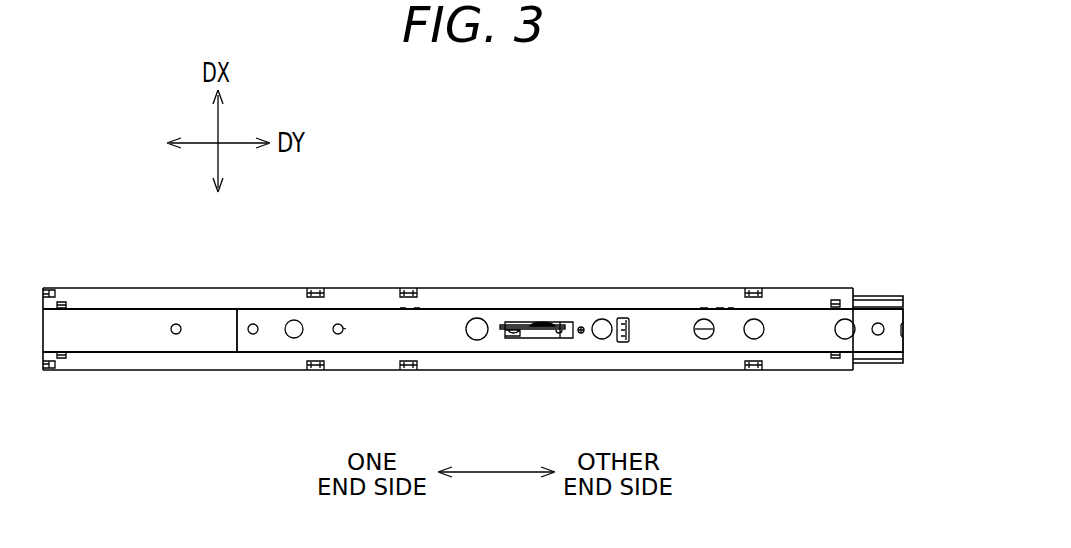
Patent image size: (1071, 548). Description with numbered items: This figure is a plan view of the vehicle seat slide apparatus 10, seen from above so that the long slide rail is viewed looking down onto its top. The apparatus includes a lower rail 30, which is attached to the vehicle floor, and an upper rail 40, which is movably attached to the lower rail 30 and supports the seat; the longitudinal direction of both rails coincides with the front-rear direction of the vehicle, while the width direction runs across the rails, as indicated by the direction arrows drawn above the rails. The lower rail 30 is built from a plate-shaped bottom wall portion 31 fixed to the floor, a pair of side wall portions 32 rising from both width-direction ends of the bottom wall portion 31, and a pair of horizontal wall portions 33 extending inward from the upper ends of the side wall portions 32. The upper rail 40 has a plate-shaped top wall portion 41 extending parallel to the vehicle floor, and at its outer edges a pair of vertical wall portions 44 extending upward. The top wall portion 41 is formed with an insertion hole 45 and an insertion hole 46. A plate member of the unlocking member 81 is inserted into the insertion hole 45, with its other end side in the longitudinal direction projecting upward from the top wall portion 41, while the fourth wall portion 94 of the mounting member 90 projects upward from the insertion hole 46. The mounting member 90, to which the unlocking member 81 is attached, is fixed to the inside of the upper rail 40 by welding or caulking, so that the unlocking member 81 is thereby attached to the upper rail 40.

The vehicle seat slide apparatus 10 is at (794, 248).
The lower rail 30 is at (208, 371).
The bottom wall portion 31 is at (138, 335).
The side wall portions 32 is at (186, 288).
The horizontal wall portions 33 is at (99, 294).
The upper rail 40 is at (433, 310).
The top wall portion 41 is at (355, 320).
The vertical wall portions 44 is at (880, 296).
The insertion hole 45 is at (520, 340).
The insertion hole 46 is at (622, 341).
The unlocking member 81 is at (518, 322).
The mounting member 90 is at (568, 320).
The fourth wall portion 94 is at (638, 318).